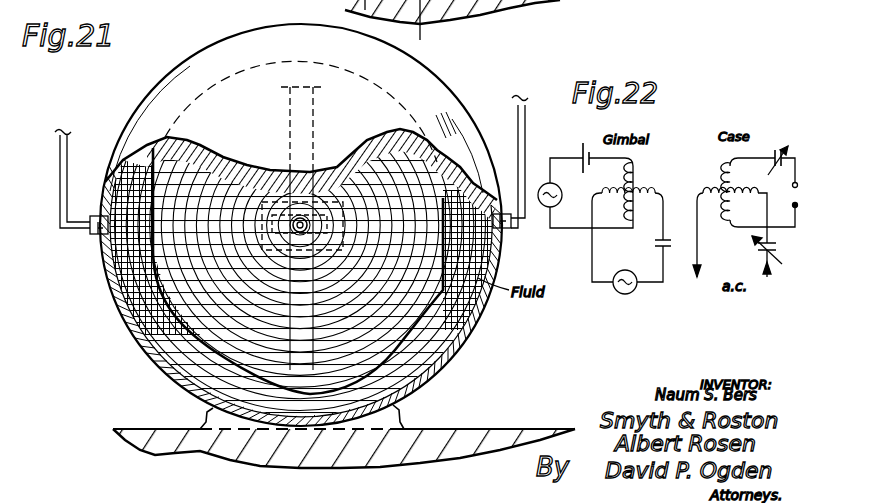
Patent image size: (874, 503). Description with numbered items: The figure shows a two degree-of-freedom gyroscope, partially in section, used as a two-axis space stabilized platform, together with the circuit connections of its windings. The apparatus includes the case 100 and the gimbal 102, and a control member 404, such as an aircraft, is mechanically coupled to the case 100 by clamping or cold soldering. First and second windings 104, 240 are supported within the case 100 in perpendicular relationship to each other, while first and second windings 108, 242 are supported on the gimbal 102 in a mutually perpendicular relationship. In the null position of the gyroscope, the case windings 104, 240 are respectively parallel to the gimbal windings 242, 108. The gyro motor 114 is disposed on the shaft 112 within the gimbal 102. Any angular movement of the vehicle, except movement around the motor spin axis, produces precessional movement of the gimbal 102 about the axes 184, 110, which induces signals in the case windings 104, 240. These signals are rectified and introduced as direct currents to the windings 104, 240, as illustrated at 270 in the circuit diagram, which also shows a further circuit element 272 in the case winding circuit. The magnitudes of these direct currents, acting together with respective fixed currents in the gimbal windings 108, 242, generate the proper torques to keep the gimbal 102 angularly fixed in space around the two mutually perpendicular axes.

In FIG. 21, the case 100 is at (452, 86).
In FIG. 21, the gimbal 102 is at (178, 320).
In FIG. 21, the first winding 104 is at (440, 315).
In FIG. 22, the first winding 104 is at (753, 188).
In FIG. 21, the first winding 108 is at (437, 155).
In FIG. 22, the first winding 108 is at (635, 165).
In FIG. 21, the axis 110 is at (298, 222).
In FIG. 21, the shaft 112 is at (313, 121).
In FIG. 21, the gyro motor 114 is at (352, 166).
In FIG. 21, the axis 184 is at (48, 228).
In FIG. 21, the second winding 240 is at (478, 251).
In FIG. 22, the second winding 240 is at (725, 167).
In FIG. 21, the second winding 242 is at (347, 172).
In FIG. 22, the second winding 242 is at (655, 194).
In FIG. 22, the rectified direct current introduction 270 is at (771, 249).
In FIG. 22, the variable capacitor 272 is at (775, 153).
In FIG. 21, the control member 404 is at (163, 427).